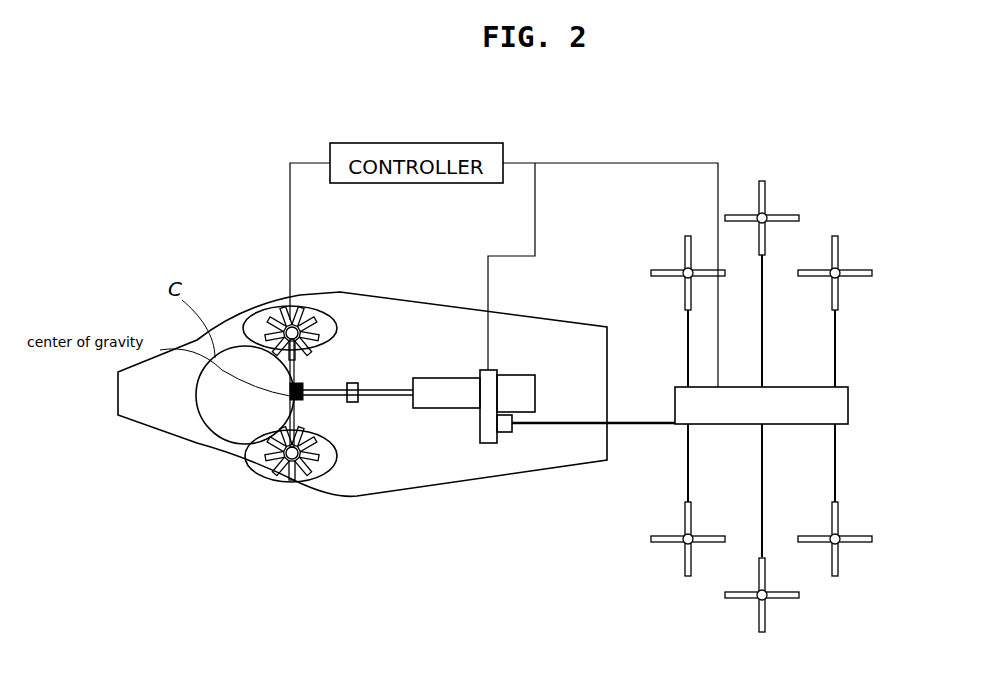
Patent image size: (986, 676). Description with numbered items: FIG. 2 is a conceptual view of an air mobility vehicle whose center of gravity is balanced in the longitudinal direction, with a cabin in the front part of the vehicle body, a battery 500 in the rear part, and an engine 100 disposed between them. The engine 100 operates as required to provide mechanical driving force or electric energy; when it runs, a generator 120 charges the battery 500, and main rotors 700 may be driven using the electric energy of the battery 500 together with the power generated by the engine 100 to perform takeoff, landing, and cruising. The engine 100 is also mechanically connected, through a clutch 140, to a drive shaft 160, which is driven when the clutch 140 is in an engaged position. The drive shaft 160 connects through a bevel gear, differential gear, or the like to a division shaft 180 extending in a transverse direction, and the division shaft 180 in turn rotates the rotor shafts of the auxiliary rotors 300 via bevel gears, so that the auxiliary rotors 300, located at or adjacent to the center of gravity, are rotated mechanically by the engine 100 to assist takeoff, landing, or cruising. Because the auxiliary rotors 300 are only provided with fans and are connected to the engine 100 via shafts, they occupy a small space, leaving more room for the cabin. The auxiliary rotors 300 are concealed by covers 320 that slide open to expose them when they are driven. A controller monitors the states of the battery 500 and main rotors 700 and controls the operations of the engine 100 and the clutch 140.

The engine 100 is at (443, 400).
The generator 120 is at (507, 433).
The clutch 140 is at (352, 382).
The drive shaft 160 is at (335, 397).
The division shaft 180 is at (287, 403).
The auxiliary rotors 300 is at (272, 480).
The covers 320 is at (262, 322).
The battery 500 is at (838, 404).
The main rotors 700 is at (839, 263).